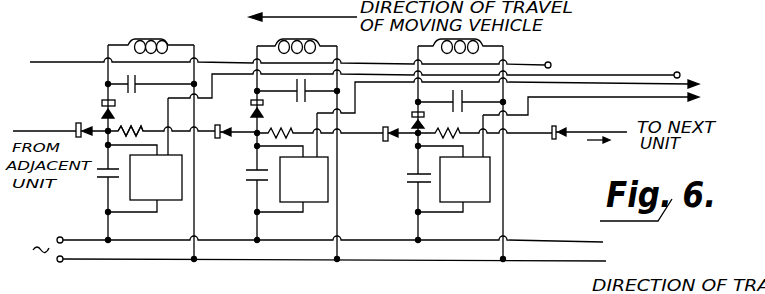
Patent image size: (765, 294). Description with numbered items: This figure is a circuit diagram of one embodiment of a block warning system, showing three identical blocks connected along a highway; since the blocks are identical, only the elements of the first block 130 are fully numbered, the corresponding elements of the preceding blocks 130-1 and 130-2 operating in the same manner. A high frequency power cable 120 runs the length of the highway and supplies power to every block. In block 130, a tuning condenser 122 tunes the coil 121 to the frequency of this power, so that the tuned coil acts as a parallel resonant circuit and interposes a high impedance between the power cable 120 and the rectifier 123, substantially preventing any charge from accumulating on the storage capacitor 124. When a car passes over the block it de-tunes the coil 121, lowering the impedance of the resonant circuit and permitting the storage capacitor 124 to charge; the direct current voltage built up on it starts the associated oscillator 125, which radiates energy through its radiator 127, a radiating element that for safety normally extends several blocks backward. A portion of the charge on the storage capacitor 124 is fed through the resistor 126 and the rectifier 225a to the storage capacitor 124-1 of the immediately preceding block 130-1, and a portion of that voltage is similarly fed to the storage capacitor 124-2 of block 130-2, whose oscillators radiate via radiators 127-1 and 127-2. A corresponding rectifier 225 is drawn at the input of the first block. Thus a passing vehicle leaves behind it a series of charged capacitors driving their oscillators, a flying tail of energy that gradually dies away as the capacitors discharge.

The high frequency power cable 120 is at (143, 244).
The coil 121 is at (181, 32).
The tuning condenser 122 is at (107, 84).
The rectifier 123 is at (103, 102).
The storage capacitor 124 is at (100, 180).
The oscillator 125 is at (182, 201).
The resistor 126 is at (150, 113).
The radiator 127 is at (231, 76).
The block 130 is at (150, 236).
The rectifier 225 is at (80, 123).
The rectifier 225a is at (220, 140).
The storage capacitor 124-1 is at (252, 186).
The block 130-1 is at (305, 237).
The radiator 127-1 is at (403, 84).
The storage capacitor 124-2 is at (410, 182).
The block 130-2 is at (485, 237).
The radiator 127-2 is at (615, 98).